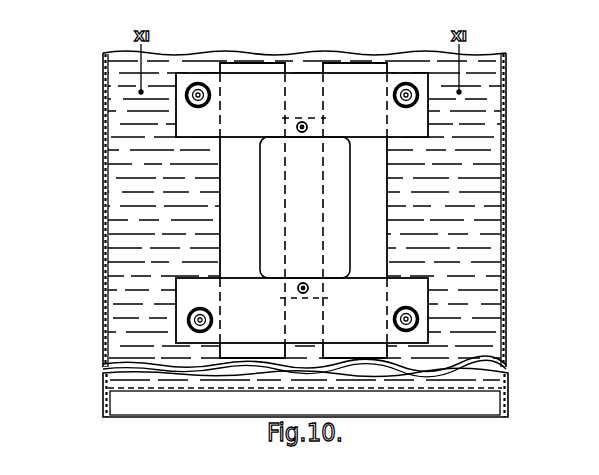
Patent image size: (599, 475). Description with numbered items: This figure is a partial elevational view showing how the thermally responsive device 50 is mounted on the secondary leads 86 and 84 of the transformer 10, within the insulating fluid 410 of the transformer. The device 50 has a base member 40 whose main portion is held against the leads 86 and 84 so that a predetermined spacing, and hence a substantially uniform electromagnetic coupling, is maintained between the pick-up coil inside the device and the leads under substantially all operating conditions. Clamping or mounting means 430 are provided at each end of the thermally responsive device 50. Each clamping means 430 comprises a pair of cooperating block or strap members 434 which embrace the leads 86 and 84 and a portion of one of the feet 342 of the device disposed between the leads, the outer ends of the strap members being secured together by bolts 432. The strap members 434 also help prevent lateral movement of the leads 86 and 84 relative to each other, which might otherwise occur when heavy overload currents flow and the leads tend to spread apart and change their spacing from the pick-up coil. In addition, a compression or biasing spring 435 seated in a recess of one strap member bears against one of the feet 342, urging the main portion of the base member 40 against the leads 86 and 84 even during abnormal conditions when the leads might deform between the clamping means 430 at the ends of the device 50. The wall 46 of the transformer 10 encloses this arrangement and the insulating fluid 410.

The transformer 10 is at (84, 357).
The base member 40 is at (351, 225).
The tank wall 46 is at (103, 261).
The thermally responsive device 50 is at (388, 175).
The secondary lead 84 is at (246, 66).
The secondary lead 86 is at (353, 66).
The feet 342 is at (312, 118).
The insulating fluid 410 is at (108, 314).
The clamping means 430 is at (218, 152).
The bolts 432 is at (193, 107).
The block or strap members 434 is at (249, 137).
The compression or biasing spring 435 is at (302, 133).